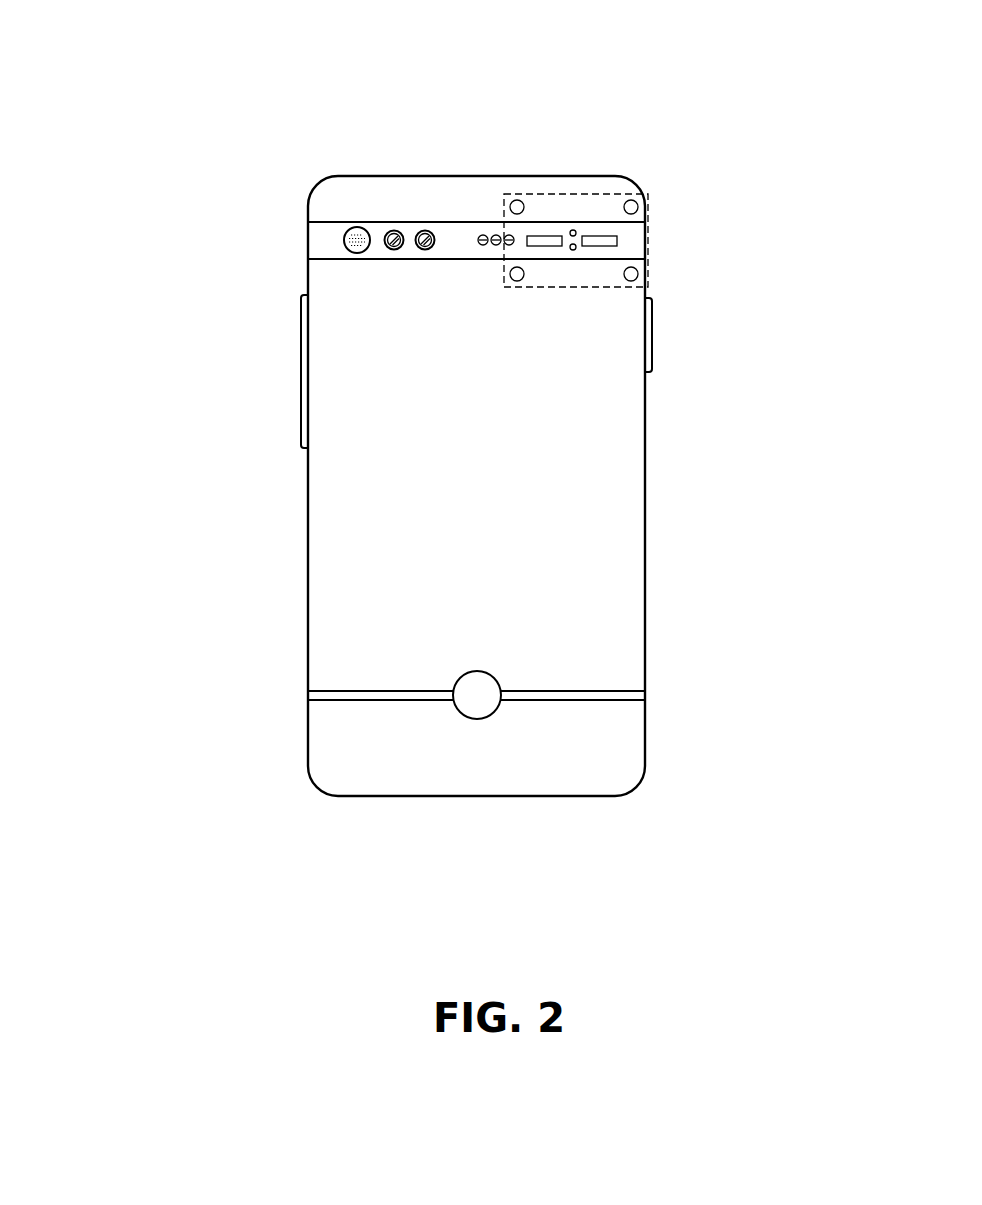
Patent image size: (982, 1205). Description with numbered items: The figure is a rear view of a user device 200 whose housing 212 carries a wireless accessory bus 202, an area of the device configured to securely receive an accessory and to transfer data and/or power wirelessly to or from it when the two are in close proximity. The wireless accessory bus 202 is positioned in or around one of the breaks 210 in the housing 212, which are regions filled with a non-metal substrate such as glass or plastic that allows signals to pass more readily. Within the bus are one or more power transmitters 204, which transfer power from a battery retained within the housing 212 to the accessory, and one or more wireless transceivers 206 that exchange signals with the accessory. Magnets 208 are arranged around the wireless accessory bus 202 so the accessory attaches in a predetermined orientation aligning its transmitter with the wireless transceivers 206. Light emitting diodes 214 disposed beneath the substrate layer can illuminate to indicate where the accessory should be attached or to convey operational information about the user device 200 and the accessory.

The user device 200 is at (345, 29).
The wireless accessory bus 202 is at (601, 185).
The power transmitter(s) 204 is at (564, 259).
The wireless transceiver(s) 206 is at (628, 250).
The magnet(s) 208 is at (515, 188).
The break(s) 210 is at (302, 253).
The housing 212 is at (656, 472).
The light emitting diodes (LEDs) 214 is at (467, 226).